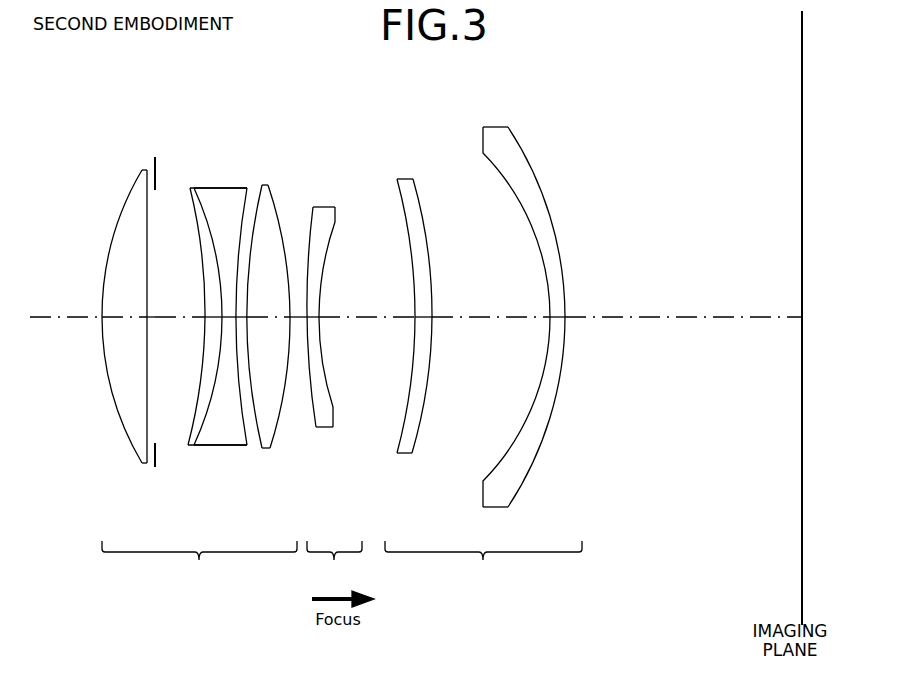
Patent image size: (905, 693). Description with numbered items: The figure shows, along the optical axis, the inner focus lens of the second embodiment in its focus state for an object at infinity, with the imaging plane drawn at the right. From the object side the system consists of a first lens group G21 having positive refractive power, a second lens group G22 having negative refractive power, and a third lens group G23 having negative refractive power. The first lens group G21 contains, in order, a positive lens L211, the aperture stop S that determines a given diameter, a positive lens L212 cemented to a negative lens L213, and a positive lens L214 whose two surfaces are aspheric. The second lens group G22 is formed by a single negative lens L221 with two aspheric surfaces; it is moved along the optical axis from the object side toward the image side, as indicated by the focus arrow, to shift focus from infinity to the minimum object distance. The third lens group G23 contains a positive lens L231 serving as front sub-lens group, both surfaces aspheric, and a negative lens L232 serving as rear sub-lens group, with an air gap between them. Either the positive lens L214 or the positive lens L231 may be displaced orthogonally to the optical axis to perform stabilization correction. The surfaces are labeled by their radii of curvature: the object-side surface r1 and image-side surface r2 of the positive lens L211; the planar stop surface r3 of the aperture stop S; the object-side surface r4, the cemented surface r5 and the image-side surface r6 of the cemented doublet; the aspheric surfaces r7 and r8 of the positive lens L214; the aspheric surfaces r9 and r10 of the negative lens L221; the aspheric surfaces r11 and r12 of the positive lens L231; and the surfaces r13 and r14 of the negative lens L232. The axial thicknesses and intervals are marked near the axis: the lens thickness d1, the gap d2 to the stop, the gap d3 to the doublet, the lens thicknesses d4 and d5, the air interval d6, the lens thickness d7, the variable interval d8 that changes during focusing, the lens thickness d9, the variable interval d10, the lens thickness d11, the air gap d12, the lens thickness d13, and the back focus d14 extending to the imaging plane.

The aperture stop S is at (155, 157).
The positive lens L211 is at (96, 316).
The positive lens L212 is at (203, 289).
The negative lens L213 is at (223, 282).
The positive lens L214 is at (279, 285).
The negative lens L221 is at (337, 287).
The positive lens (front sub-lens group) L231 is at (398, 286).
The negative lens (rear sub-lens group) L232 is at (543, 287).
The first lens group G21 is at (199, 565).
The second lens group G22 is at (334, 565).
The third lens group G23 is at (483, 565).
The radius of curvature of lens surface r1 is at (102, 282).
The radius of curvature of lens surface r2 is at (146, 255).
The diaphragm surface r3 is at (153, 168).
The radius of curvature of lens surface r4 is at (205, 282).
The radius of curvature of lens surface r5 is at (220, 255).
The radius of curvature of lens surface r6 is at (243, 203).
The radius of curvature of lens surface r7 is at (257, 200).
The radius of curvature of lens surface r8 is at (280, 228).
The radius of curvature of lens surface r9 is at (310, 253).
The radius of curvature of lens surface r10 is at (318, 280).
The radius of curvature of lens surface r11 is at (407, 245).
The radius of curvature of lens surface r12 is at (427, 316).
The radius of curvature of lens surface r13 is at (530, 220).
The radius of curvature of lens surface r14 is at (548, 203).
The lens thickness d1 is at (120, 320).
The surface interval d2 is at (152, 320).
The surface interval d3 is at (192, 318).
The lens thickness d4 is at (213, 320).
The lens thickness d5 is at (228, 320).
The surface interval d6 is at (241, 320).
The lens thickness d7 is at (268, 320).
The variable surface interval d8 is at (298, 318).
The lens thickness d9 is at (314, 320).
The variable surface interval d10 is at (370, 320).
The lens thickness d11 is at (423, 320).
The surface interval d12 is at (489, 320).
The lens thickness d13 is at (558, 322).
The back focus interval d14 is at (720, 320).